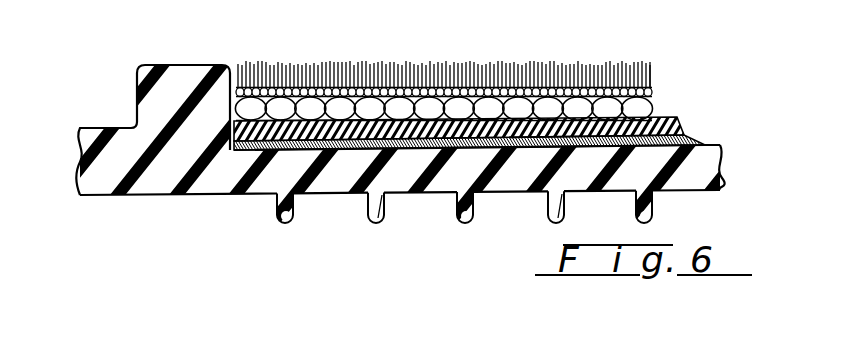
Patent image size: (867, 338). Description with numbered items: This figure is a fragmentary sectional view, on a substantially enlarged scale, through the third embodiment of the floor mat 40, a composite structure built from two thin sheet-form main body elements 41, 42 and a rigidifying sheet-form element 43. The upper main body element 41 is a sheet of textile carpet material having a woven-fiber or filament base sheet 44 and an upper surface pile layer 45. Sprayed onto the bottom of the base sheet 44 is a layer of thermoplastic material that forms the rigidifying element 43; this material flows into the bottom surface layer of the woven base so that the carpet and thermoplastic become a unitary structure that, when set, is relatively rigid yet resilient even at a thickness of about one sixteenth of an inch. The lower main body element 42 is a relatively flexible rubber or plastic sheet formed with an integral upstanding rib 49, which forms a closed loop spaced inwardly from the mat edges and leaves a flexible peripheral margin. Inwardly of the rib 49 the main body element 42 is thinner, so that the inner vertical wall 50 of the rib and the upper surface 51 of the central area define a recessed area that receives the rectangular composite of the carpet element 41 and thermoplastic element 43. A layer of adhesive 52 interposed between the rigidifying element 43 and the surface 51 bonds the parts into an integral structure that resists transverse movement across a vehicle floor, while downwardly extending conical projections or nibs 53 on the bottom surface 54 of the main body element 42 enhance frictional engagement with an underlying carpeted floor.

The floor mat 40 is at (493, 81).
The main body element 41 is at (664, 59).
The main body element 42 is at (426, 135).
The rigidifying sheet-form element 43 is at (677, 119).
The base sheet 44 is at (653, 95).
The pile layer 45 is at (515, 65).
The upstanding rib 49 is at (147, 66).
The inner vertical wall 50 is at (240, 67).
The upper surface 51 is at (707, 142).
The adhesive 52 is at (697, 135).
The conical projections 53 is at (457, 221).
The bottom surface 54 is at (143, 192).